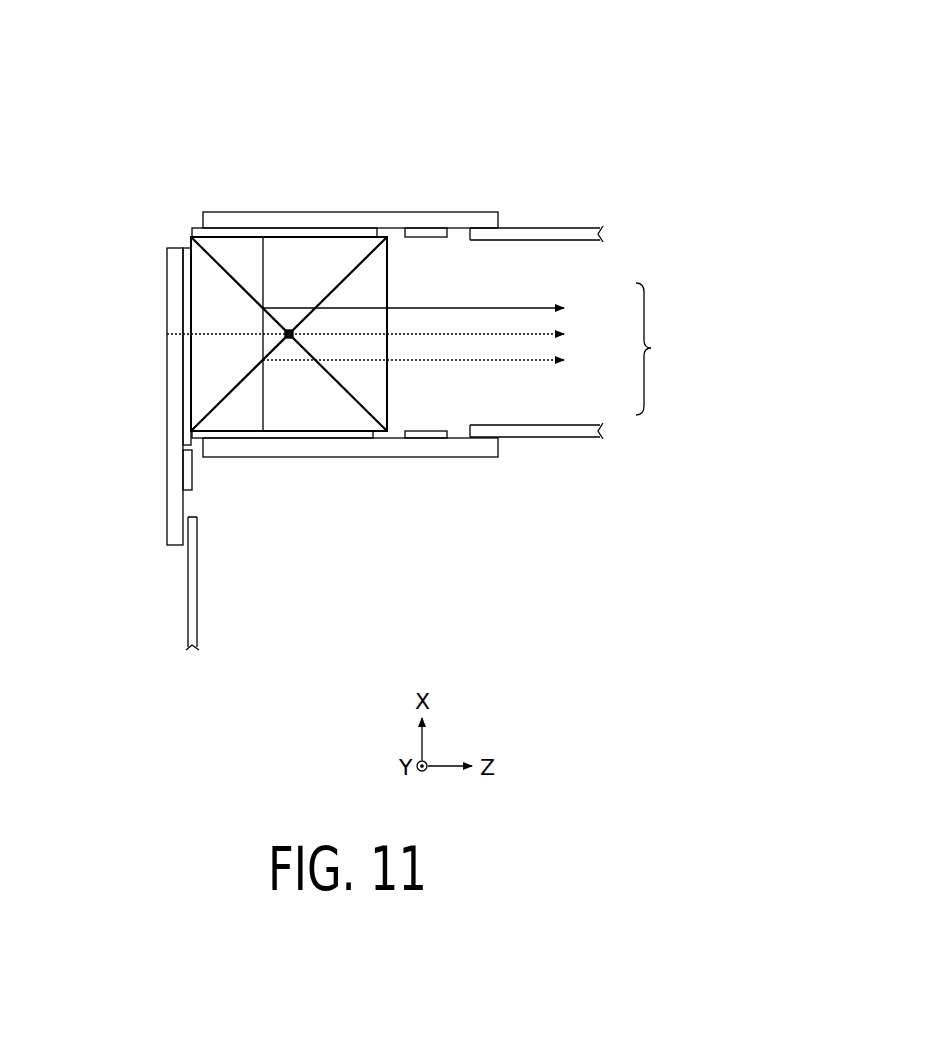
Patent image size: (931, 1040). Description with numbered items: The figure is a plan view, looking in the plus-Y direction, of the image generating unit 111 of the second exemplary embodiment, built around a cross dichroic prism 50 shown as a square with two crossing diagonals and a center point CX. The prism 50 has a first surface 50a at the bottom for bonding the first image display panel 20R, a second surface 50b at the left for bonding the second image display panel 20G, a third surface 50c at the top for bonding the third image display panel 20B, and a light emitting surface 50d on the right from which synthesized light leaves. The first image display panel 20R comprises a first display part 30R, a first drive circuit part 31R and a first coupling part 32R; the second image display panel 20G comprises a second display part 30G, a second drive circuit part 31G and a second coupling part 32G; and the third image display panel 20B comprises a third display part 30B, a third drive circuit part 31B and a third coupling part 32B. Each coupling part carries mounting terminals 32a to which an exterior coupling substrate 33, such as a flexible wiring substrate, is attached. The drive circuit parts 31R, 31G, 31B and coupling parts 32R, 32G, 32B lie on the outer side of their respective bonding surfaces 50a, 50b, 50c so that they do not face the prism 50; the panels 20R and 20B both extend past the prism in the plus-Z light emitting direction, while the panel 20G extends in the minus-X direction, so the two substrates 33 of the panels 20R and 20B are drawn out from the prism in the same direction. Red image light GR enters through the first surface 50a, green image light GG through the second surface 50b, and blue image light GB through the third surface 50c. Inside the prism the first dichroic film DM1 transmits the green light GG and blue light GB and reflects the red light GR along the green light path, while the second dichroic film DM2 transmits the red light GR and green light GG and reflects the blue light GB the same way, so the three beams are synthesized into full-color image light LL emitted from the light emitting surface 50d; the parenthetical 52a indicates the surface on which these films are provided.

The image generating unit 111 is at (537, 106).
The cross dichroic prism 50 is at (190, 232).
The first surface 50a is at (280, 432).
The second surface 50b is at (190, 357).
The third surface 50c is at (245, 232).
The light emitting surface 50d is at (388, 275).
The center axis of prism CX is at (289, 334).
The first dichroic film DM1 is at (340, 278).
The second dichroic film DM2 is at (342, 392).
The dichroic mirror surface 52a is at (313, 343).
The third image display panel 20B is at (468, 185).
The third display part 30B is at (287, 222).
The third drive circuit part 31B is at (430, 230).
The third coupling part 32B is at (497, 230).
The mounting terminals 32a is at (562, 196).
The exterior coupling substrate 33 is at (565, 236).
The first image display panel 20R is at (493, 473).
The first display part 30R is at (315, 446).
The first drive circuit part 31R is at (437, 440).
The first coupling part 32R is at (500, 438).
The second image display panel 20G is at (136, 561).
The second display part 30G is at (185, 390).
The second drive circuit part 31G is at (192, 480).
The second coupling part 32G is at (187, 545).
The blue image light GB is at (568, 305).
The green image light GG is at (568, 336).
The red image light GR is at (568, 362).
The full-color image light LL is at (661, 349).